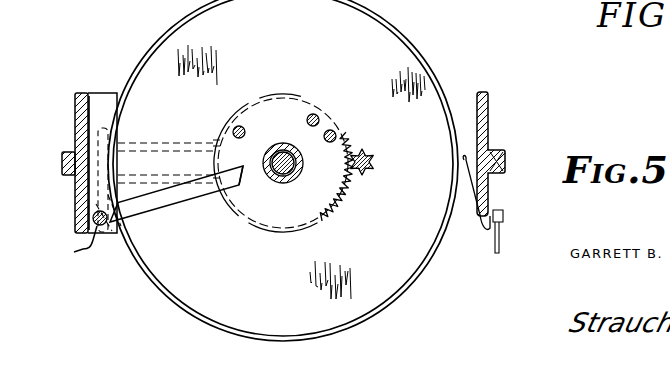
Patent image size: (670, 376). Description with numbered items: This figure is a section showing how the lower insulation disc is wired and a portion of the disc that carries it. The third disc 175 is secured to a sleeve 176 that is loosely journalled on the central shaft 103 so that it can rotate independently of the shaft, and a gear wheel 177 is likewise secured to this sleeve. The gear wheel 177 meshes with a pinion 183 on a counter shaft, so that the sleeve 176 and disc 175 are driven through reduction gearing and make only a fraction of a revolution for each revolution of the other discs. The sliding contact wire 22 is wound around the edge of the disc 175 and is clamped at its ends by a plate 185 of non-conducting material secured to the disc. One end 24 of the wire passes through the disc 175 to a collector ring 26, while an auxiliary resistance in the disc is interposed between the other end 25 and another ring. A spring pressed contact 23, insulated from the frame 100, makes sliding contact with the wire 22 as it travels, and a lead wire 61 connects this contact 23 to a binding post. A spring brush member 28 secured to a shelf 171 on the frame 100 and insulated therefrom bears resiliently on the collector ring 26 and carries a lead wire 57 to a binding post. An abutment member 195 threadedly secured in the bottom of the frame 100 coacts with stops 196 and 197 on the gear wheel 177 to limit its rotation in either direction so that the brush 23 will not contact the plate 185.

The second wire 22 is at (430, 57).
The contact member 23 is at (497, 170).
The wire end 24 is at (136, 205).
The wire end 25 is at (117, 138).
The collector ring 26 is at (169, 161).
The spring brush member 28 is at (187, 205).
The lead wire 57 is at (88, 252).
The lead wire 61 is at (500, 246).
The frame 100 is at (77, 128).
The central shaft 103 is at (279, 143).
The shelf 171 is at (91, 100).
The third disc 175 is at (300, 283).
The sleeve 176 is at (283, 183).
The gear wheel 177 is at (343, 203).
The pinion 183 is at (371, 158).
The plate 185 is at (100, 186).
The abutment member 195 is at (238, 126).
The stop 196 is at (315, 114).
The stop 197 is at (336, 133).